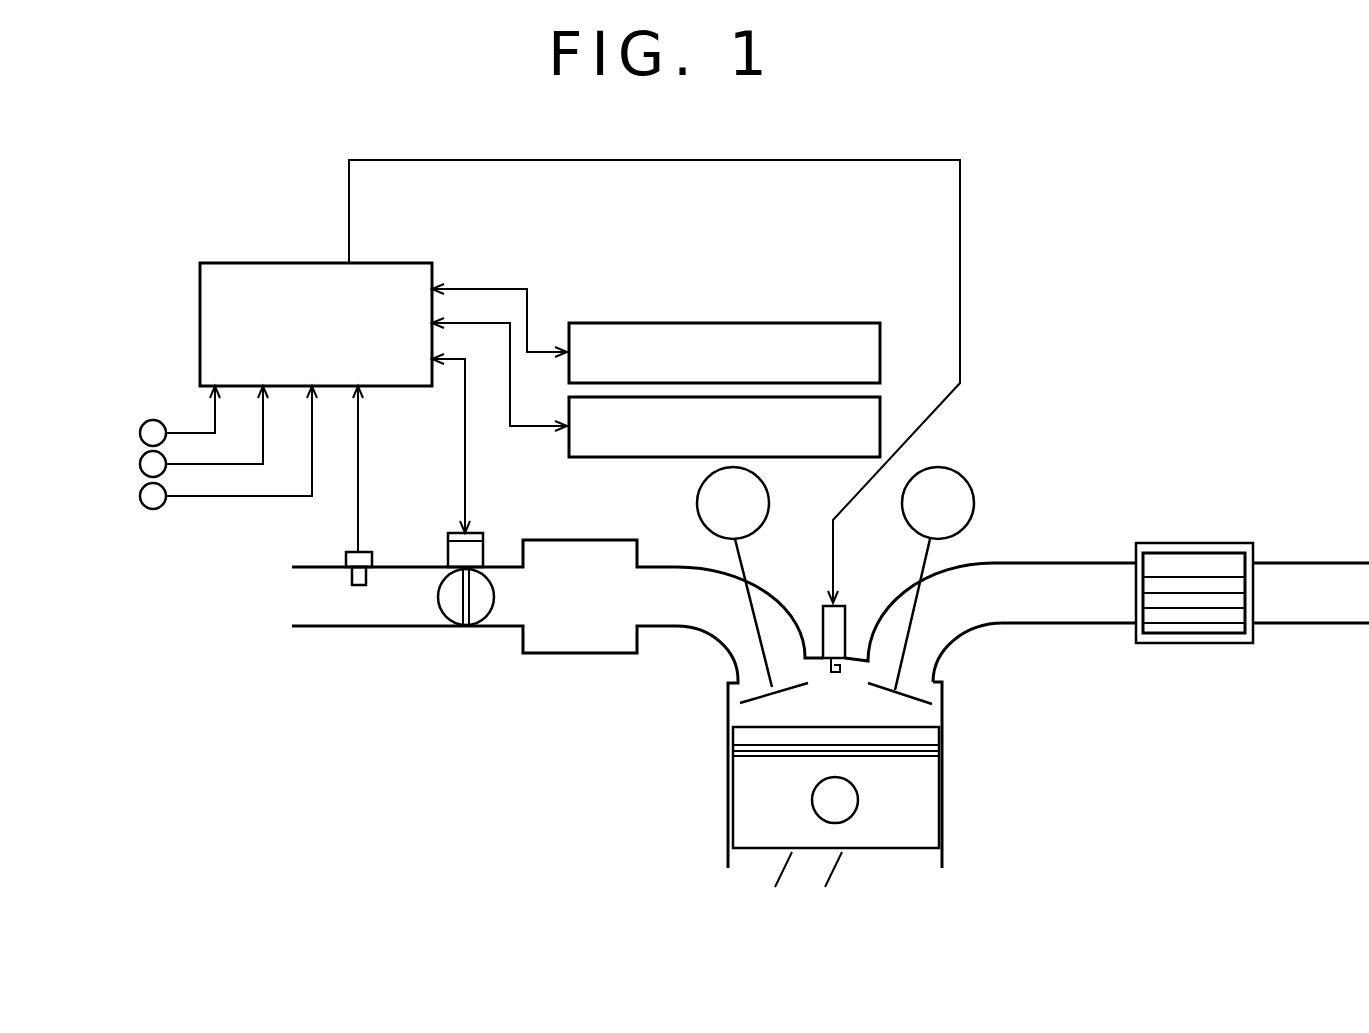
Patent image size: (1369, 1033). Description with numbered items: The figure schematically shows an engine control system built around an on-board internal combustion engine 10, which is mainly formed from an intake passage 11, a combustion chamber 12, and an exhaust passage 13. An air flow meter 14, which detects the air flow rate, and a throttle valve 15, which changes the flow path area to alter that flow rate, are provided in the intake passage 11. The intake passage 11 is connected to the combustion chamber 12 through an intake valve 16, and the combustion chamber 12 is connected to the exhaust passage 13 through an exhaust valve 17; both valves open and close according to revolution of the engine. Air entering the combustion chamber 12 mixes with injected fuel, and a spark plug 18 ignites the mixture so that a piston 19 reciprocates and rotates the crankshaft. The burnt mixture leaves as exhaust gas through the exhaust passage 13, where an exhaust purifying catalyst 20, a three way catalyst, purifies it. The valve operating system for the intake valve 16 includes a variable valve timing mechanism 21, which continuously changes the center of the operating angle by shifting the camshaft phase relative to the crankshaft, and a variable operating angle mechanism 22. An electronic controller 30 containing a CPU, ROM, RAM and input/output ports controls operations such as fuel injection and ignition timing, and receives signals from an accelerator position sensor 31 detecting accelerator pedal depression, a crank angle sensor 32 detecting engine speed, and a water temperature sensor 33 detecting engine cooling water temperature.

The internal combustion engine 10 is at (680, 712).
The intake passage 11 is at (399, 627).
The combustion chamber 12 is at (856, 716).
The exhaust passage 13 is at (966, 630).
The air flow meter 14 is at (346, 557).
The throttle valve 15 is at (455, 610).
The intake valve 16 is at (766, 644).
The exhaust valve 17 is at (908, 622).
The spark plug 18 is at (848, 623).
The piston 19 is at (906, 830).
The exhaust purifying catalyst 20 is at (1195, 558).
The variable valve timing mechanism 21 is at (883, 362).
The variable operating angle mechanism 22 is at (883, 430).
The electronic controller 30 is at (200, 327).
The accelerator position sensor 31 is at (140, 434).
The crank angle sensor 32 is at (140, 465).
The water temperature sensor 33 is at (140, 497).